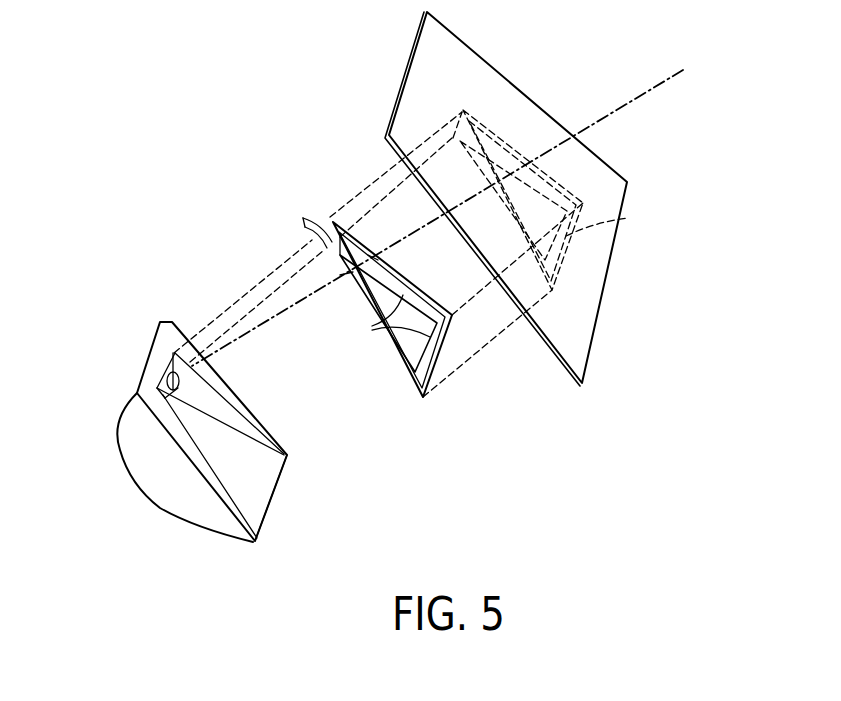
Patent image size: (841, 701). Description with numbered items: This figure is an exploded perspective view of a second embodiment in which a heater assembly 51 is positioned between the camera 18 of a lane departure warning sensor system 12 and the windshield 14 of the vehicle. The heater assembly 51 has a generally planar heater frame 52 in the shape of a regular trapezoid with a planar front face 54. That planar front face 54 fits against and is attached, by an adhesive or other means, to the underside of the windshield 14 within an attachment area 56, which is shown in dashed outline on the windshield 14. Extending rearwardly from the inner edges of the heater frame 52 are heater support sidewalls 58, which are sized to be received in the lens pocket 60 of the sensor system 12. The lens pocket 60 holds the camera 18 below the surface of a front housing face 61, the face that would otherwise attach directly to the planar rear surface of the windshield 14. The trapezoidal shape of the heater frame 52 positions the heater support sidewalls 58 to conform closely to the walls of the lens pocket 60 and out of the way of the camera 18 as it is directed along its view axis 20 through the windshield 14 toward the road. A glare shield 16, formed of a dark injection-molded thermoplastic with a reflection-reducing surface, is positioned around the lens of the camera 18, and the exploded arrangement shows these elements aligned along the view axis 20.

The lane departure warning sensor system 12 is at (112, 456).
The windshield 14 is at (443, 52).
The glare shield 16 is at (260, 467).
The camera 18 is at (163, 372).
The view axis 20 is at (628, 101).
The heater assembly 51 is at (311, 183).
The heater frame 52 is at (322, 262).
The planar front face 54 is at (450, 358).
The attachment area 56 is at (628, 218).
The heater support sidewalls 58 is at (372, 326).
The lens pocket 60 is at (255, 497).
The front housing face 61 is at (175, 333).